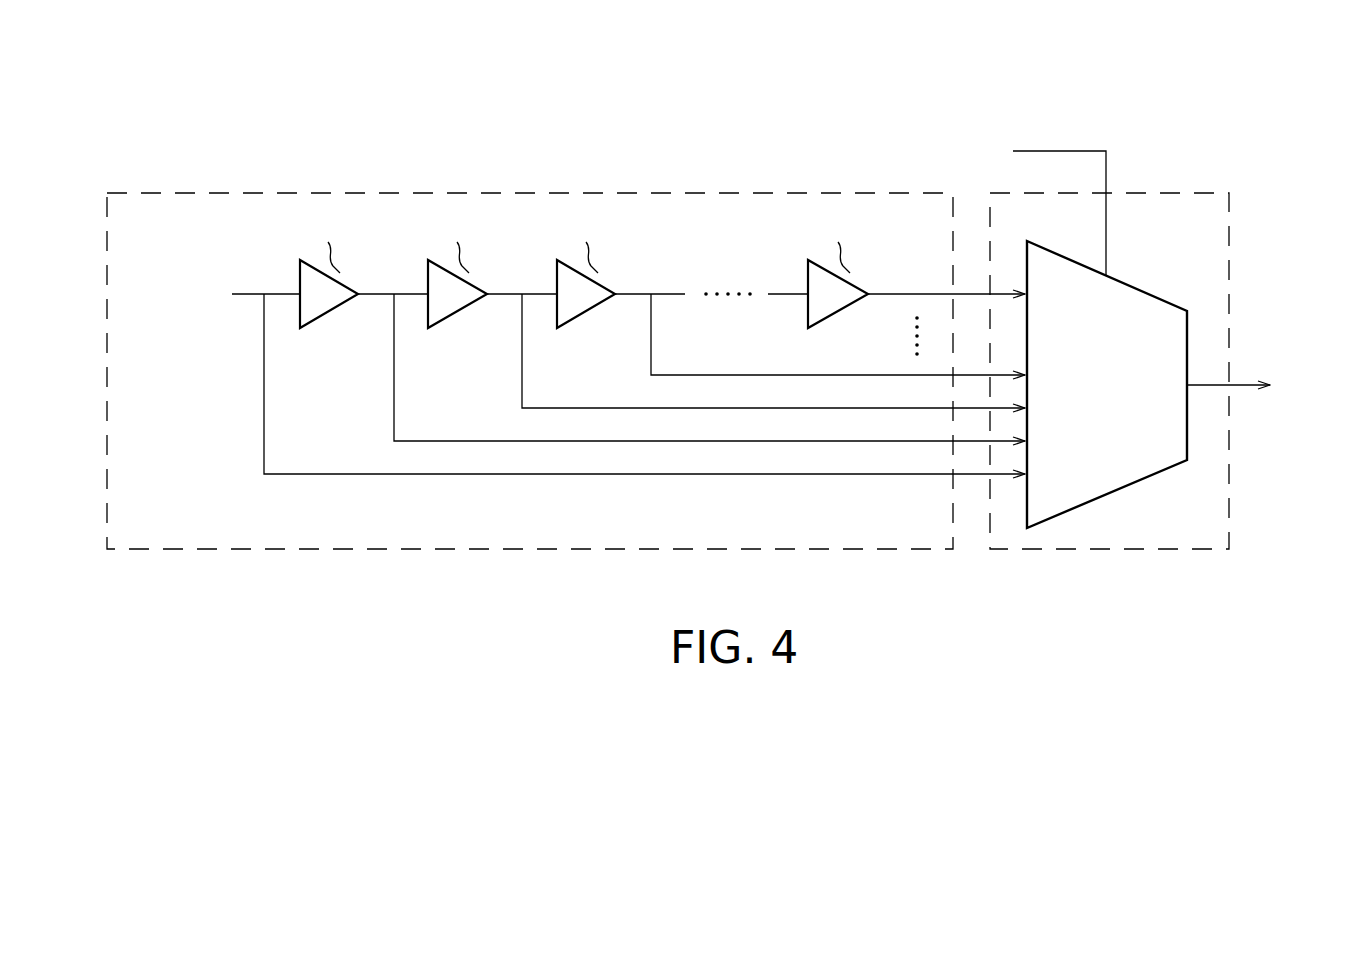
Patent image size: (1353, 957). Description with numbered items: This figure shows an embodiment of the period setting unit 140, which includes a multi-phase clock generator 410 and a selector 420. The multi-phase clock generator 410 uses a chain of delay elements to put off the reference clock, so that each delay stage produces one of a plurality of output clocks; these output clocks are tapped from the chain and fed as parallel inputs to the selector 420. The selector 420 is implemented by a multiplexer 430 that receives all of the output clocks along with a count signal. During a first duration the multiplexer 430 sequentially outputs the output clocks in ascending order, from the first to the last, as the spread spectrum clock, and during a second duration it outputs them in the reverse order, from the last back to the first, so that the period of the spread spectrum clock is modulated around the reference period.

The period setting unit 140 is at (856, 92).
The multi-phase clock generator 410 is at (527, 192).
The selector 420 is at (1177, 192).
The multiplexer 430 is at (1137, 285).